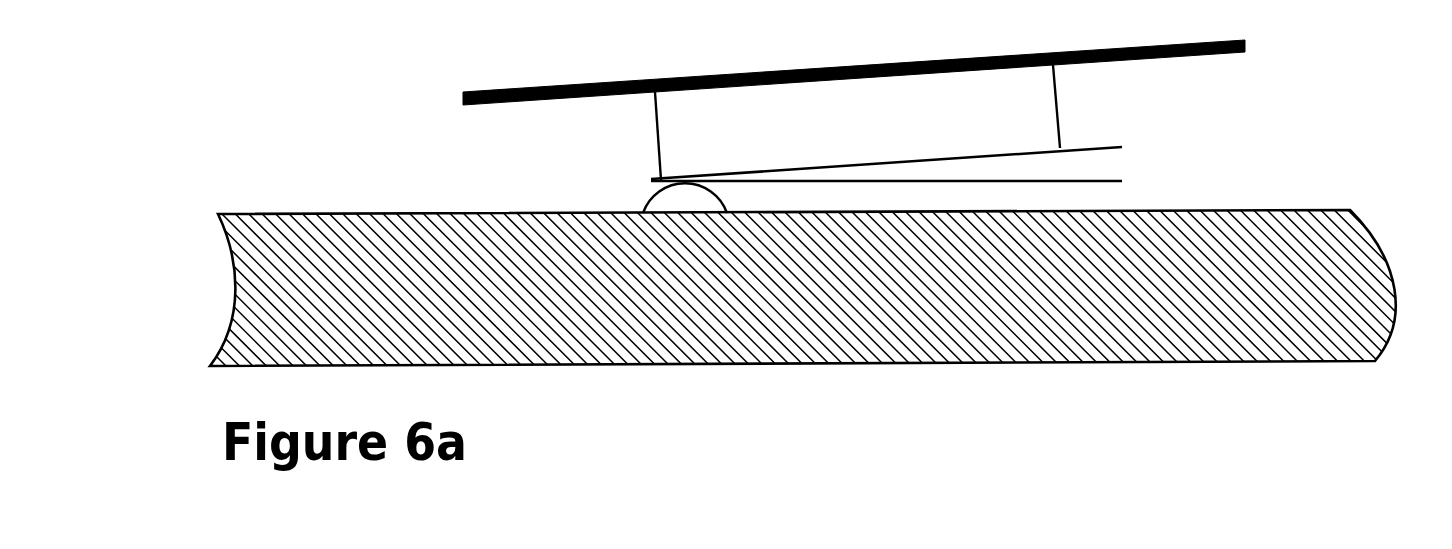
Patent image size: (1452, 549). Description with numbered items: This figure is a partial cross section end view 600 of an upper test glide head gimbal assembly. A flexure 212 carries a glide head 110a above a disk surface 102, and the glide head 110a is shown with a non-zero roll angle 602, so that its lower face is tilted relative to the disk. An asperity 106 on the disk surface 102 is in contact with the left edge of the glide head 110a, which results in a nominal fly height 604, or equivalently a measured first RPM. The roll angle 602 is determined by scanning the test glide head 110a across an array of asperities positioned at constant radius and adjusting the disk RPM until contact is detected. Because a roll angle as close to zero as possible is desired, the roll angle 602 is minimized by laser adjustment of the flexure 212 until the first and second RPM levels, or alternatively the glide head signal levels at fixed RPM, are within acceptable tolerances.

The substrate / wafer 102 is at (1036, 302).
The asperity 106 is at (683, 214).
The flexure 212 is at (465, 93).
The glide head 110a is at (1006, 121).
The roll angle 602 is at (861, 158).
The nominal fly height 604 is at (1097, 190).
The partial cross section end view 600 is at (1265, 130).